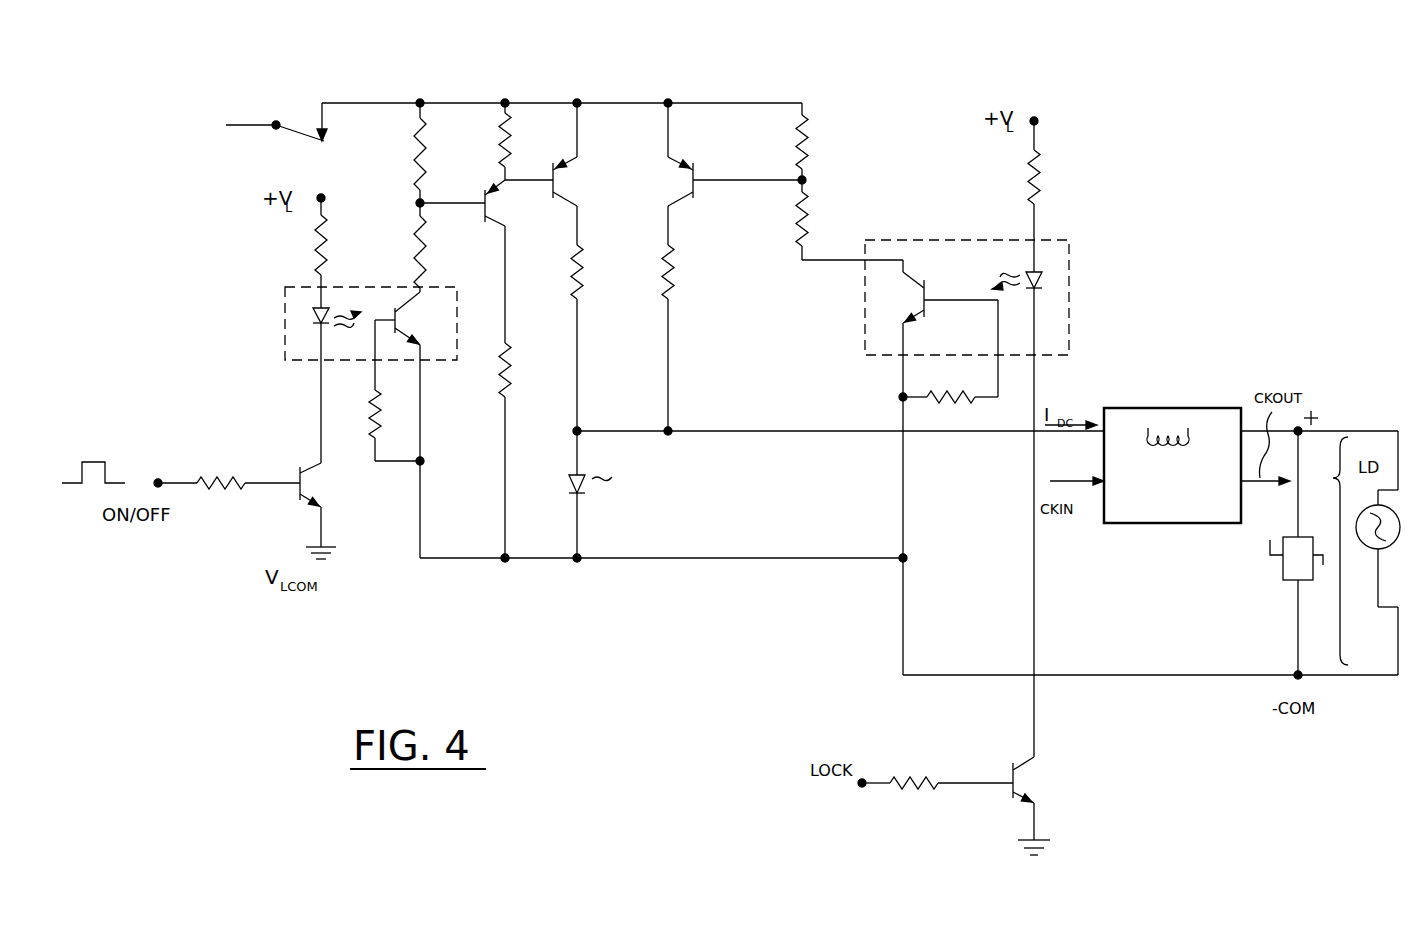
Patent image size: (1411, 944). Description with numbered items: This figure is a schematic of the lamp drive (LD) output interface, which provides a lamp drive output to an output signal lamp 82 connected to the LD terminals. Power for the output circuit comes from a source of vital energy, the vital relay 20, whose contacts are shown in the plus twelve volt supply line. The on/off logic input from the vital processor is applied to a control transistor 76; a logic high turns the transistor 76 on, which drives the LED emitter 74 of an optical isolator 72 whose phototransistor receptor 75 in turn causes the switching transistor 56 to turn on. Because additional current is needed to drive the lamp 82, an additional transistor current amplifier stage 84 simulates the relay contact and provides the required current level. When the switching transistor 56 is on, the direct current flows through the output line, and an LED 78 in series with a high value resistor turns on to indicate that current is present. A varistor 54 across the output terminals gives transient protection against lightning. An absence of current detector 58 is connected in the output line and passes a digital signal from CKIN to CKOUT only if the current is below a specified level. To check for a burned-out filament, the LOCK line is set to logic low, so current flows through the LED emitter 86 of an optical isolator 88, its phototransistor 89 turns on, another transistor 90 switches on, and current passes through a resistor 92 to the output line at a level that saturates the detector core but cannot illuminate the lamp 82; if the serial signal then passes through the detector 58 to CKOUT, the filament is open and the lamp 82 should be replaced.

The vital relay 20 is at (288, 146).
The switching transistor 56 is at (492, 186).
The optical isolator 72 is at (285, 334).
The LED emitter 74 is at (330, 306).
The phototransistor receptor 75 is at (422, 342).
The control transistor 76 is at (312, 490).
The LED 78 is at (568, 482).
The transistor current amplifier stage 84 is at (566, 192).
The LED emitter 86 is at (1046, 290).
The optical isolator 88 is at (1069, 270).
The phototransistor 89 is at (918, 298).
The transistor 90 is at (686, 167).
The resistor 92 is at (680, 284).
The absence of current detector 58 is at (1122, 408).
The varistor 54 is at (1282, 569).
The signal lamp 82 is at (1378, 549).